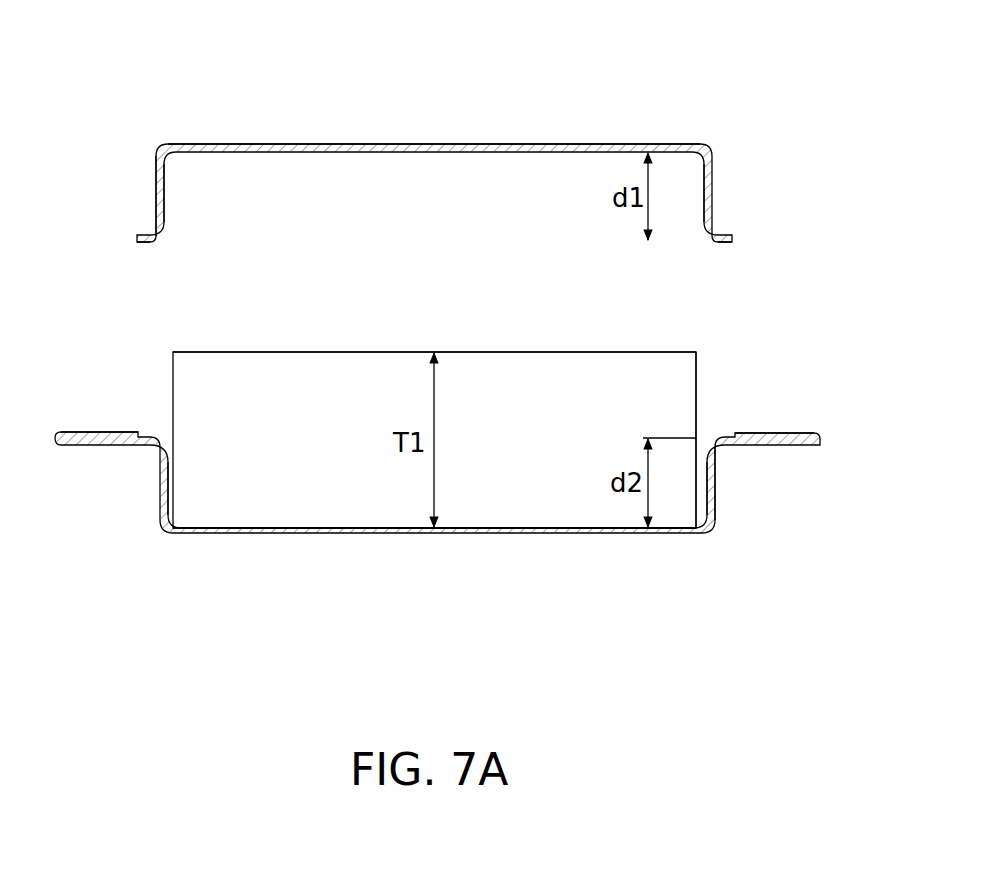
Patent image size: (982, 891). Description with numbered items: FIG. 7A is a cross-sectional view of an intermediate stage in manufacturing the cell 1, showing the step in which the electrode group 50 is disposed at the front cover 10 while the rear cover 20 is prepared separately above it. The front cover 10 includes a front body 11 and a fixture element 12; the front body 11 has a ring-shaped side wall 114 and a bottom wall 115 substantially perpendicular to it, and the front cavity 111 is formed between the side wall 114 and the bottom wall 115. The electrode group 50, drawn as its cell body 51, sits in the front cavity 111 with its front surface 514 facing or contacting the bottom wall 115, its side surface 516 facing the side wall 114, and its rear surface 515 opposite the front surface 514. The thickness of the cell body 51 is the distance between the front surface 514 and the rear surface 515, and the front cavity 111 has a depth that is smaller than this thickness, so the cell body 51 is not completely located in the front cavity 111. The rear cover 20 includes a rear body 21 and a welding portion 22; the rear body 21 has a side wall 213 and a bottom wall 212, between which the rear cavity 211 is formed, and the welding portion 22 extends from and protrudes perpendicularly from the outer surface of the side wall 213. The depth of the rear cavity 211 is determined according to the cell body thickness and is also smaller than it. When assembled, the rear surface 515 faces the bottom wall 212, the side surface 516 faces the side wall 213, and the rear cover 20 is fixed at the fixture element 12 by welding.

The cell 1 is at (818, 43).
The front cover 10 is at (437, 536).
The front body 11 is at (186, 537).
The fixture element 12 is at (124, 446).
The front cavity 111 is at (326, 457).
The side wall 114 is at (713, 480).
The bottom wall 115 is at (340, 534).
The rear cover 20 is at (421, 142).
The rear body 21 is at (673, 141).
The welding portion 22 is at (724, 230).
The rear cavity 211 is at (458, 213).
The bottom wall 212 is at (236, 142).
The side wall 213 is at (157, 190).
The electrode group 50 is at (484, 442).
The cell body 51 is at (638, 322).
The front surface 514 is at (522, 538).
The rear surface 515 is at (520, 350).
The side surface 516 is at (697, 395).